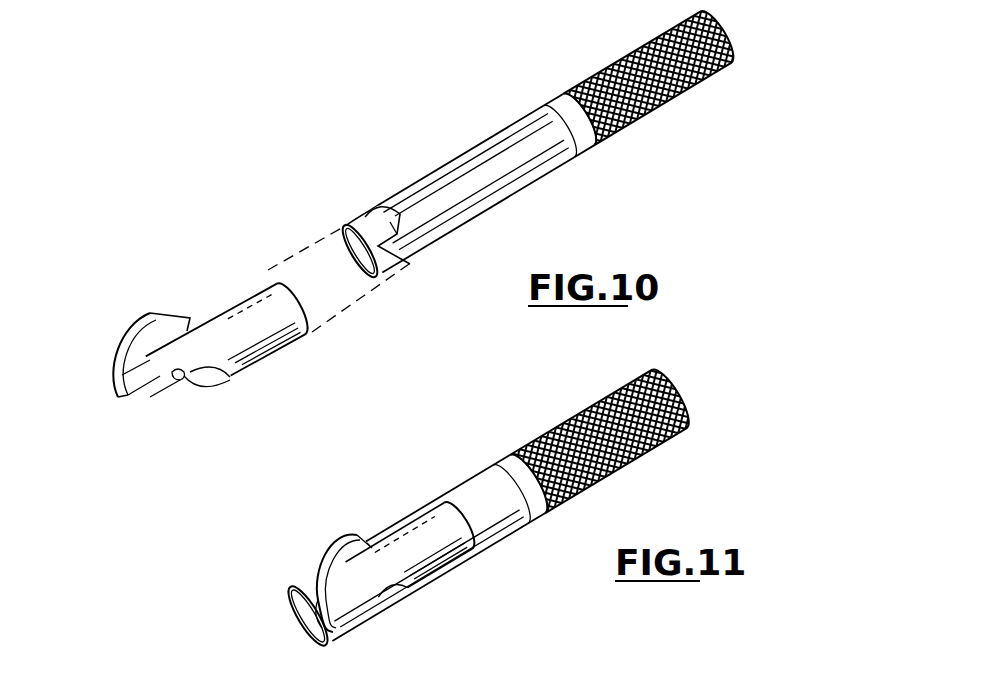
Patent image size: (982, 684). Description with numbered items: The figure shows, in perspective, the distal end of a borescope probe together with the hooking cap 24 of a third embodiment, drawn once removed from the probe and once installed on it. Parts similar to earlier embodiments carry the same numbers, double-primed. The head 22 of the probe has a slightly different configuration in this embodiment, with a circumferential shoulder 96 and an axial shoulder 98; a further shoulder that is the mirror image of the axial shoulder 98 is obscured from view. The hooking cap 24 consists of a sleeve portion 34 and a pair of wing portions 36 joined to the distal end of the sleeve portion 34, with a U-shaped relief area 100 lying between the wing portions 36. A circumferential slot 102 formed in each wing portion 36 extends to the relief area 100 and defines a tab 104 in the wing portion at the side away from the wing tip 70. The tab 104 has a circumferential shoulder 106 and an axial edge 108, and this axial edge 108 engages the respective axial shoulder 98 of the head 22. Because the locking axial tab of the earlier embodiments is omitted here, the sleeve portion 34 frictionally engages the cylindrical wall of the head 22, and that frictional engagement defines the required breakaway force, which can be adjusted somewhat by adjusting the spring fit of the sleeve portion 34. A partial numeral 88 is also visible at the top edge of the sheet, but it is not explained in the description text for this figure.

In FIG. 10, the head 22 is at (511, 145).
In FIG. 11, the head 22 is at (450, 493).
In FIG. 10, the hooking cap 24 is at (262, 368).
In FIG. 11, the hooking cap 24 is at (422, 600).
In FIG. 10, the sleeve portion 34 is at (312, 330).
In FIG. 10, the wing portions 36 is at (187, 330).
In FIG. 11, the wing portions 36 is at (366, 537).
In FIG. 10, the wing tip 70 is at (156, 318).
In FIG. 10, the handle portion 88 is at (270, 6).
In FIG. 10, the circumferential shoulder 96 is at (377, 204).
In FIG. 10, the axial shoulder 98 is at (397, 212).
In FIG. 10, the U-shaped relief area 100 is at (222, 388).
In FIG. 11, the circumferential slot 102 is at (300, 624).
In FIG. 10, the tab 104 is at (130, 367).
In FIG. 10, the circumferential shoulder 106 is at (178, 378).
In FIG. 10, the axial edge 108 is at (160, 385).